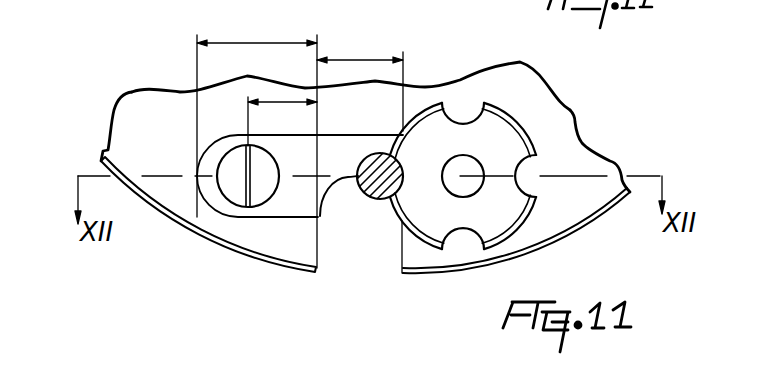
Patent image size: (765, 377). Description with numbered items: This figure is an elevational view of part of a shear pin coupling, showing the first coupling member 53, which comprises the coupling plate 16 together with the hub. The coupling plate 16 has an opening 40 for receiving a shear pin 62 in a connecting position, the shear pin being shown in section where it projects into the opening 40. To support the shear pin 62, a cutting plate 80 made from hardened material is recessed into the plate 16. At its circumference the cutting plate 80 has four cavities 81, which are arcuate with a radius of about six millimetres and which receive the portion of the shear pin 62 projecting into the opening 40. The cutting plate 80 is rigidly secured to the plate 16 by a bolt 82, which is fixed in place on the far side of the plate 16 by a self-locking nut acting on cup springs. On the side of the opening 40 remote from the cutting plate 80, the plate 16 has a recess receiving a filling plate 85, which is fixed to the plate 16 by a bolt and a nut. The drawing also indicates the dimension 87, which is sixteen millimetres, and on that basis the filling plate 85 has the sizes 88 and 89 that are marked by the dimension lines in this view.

The coupling plate 16 is at (573, 112).
The first coupling member 53 is at (597, 148).
The filling plate 85 is at (233, 247).
The size of filling plate 89 is at (271, 42).
The dimension 87 is at (368, 57).
The size of filling plate 88 is at (258, 105).
The bolt 82 is at (237, 166).
The opening 40 is at (369, 233).
The shear pin 62 is at (378, 152).
The cutting plate 80 is at (495, 132).
The cavities 81 is at (457, 107).